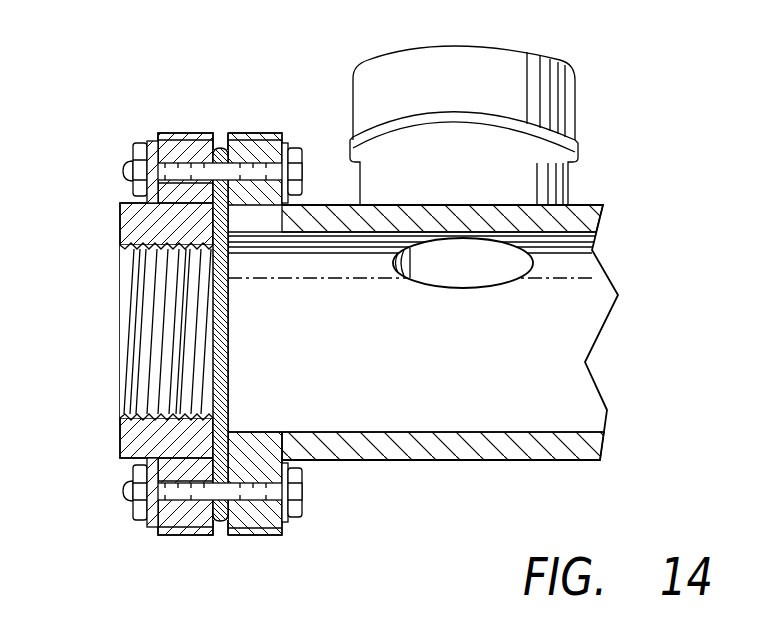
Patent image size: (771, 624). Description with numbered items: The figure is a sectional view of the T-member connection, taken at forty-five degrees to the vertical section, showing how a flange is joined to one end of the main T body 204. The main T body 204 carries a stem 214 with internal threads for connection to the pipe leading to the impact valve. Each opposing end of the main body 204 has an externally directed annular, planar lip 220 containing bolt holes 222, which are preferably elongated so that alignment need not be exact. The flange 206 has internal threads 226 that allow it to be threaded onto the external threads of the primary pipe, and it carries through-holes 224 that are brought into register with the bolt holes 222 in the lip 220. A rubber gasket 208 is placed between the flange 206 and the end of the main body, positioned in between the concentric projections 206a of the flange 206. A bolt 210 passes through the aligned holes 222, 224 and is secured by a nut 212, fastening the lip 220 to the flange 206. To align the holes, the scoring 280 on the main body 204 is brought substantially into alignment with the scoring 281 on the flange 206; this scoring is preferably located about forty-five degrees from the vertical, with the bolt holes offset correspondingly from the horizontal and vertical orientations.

The main T body 204 is at (460, 463).
The flange 206 is at (184, 536).
The concentric projection 206a is at (218, 150).
The rubber gasket 208 is at (228, 432).
The bolt 210 is at (305, 152).
The nut 212 is at (138, 142).
The stem 214 is at (570, 185).
The lip 220 is at (262, 537).
The bolt hole 222 is at (262, 150).
The through-hole 224 is at (152, 214).
The internal threads 226 is at (148, 410).
The scoring 280 is at (282, 145).
The scoring 281 is at (148, 143).